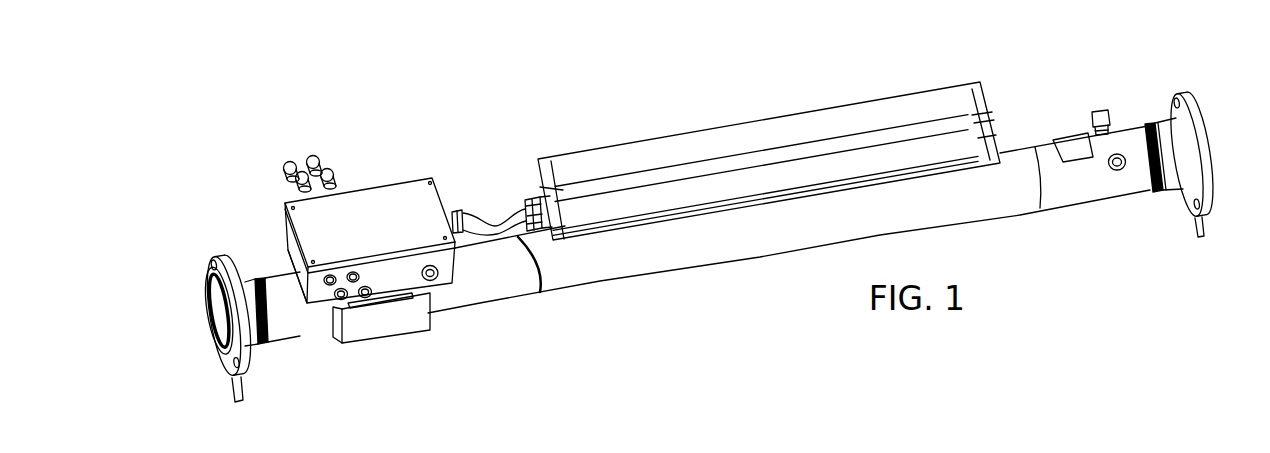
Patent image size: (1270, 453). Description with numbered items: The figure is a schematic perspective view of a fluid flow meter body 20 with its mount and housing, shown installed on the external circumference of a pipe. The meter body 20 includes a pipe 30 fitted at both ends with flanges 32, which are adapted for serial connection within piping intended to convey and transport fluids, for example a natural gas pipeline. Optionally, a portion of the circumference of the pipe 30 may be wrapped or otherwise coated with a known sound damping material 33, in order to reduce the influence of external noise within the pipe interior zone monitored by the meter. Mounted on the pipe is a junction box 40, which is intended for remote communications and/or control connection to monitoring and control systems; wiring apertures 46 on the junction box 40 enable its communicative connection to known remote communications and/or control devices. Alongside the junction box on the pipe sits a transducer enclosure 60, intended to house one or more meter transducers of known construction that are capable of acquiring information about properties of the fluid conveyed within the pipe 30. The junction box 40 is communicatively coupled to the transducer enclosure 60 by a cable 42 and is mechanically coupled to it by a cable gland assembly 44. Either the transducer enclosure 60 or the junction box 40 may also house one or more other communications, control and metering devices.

The fluid flow meter body 20 is at (780, 279).
The pipe 30 is at (1067, 193).
The flanges 32 is at (238, 366).
The sound damping material 33 is at (648, 250).
The junction box 40 is at (306, 310).
The cable 42 is at (498, 206).
The cable gland assembly 44 is at (526, 201).
The wiring apertures 46 is at (367, 300).
The transducer enclosure 60 is at (1001, 91).